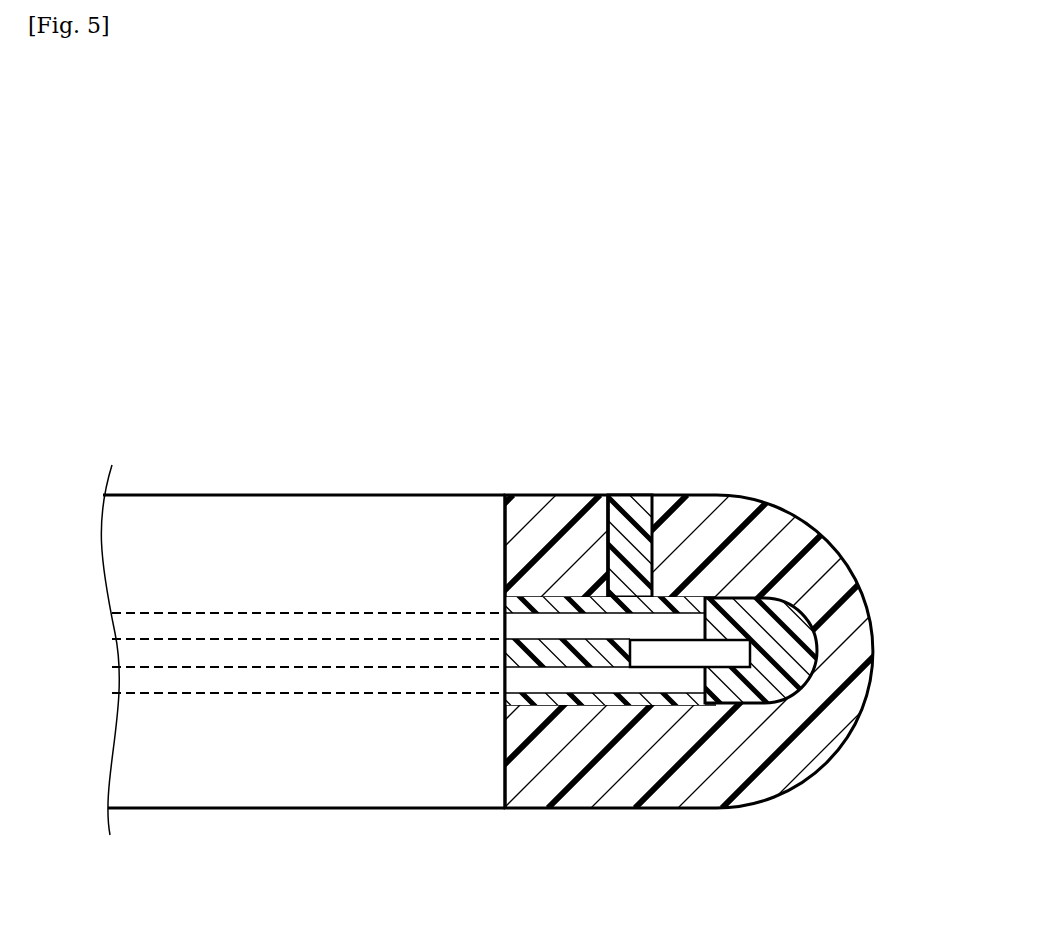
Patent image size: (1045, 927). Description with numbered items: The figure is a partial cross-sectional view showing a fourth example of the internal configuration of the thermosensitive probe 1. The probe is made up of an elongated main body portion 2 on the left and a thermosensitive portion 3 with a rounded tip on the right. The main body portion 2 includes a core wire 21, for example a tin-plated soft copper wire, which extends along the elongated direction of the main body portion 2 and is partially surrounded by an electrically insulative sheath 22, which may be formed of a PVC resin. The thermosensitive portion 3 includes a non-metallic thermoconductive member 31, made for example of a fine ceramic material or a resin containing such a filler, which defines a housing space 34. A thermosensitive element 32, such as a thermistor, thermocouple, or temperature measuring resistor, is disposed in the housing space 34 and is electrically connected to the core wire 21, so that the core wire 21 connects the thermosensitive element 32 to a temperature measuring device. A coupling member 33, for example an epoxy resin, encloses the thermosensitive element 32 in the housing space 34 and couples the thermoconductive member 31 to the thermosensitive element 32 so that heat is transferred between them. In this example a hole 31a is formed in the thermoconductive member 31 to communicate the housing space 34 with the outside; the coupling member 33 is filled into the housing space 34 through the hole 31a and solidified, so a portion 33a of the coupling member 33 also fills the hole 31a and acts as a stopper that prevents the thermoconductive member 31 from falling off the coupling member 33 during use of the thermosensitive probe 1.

The thermosensitive probe 1 is at (512, 272).
The main body portion 2 is at (376, 410).
The thermosensitive portion 3 is at (748, 423).
The core wire 21 is at (158, 613).
The sheath 22 is at (273, 517).
The thermoconductive member 31 is at (768, 527).
The hole 31a is at (648, 518).
The thermosensitive element 32 is at (670, 653).
The coupling member 33 is at (790, 643).
The portion of the coupling member 33a is at (613, 552).
The housing space 34 is at (753, 688).